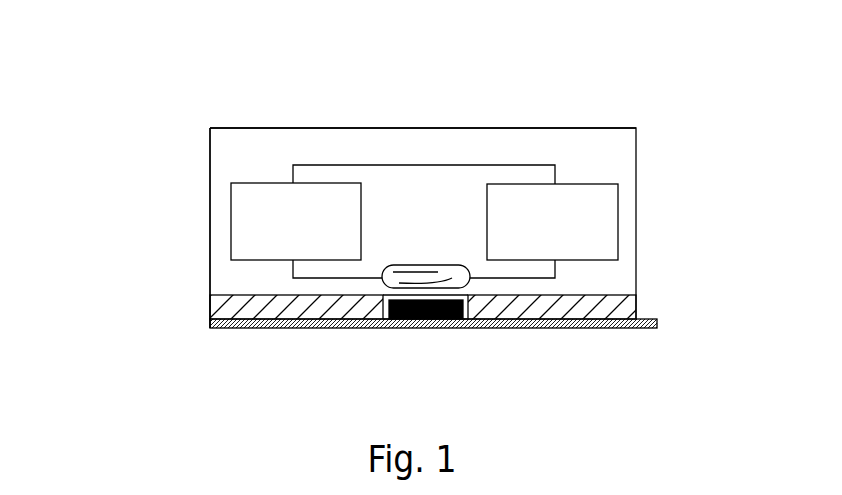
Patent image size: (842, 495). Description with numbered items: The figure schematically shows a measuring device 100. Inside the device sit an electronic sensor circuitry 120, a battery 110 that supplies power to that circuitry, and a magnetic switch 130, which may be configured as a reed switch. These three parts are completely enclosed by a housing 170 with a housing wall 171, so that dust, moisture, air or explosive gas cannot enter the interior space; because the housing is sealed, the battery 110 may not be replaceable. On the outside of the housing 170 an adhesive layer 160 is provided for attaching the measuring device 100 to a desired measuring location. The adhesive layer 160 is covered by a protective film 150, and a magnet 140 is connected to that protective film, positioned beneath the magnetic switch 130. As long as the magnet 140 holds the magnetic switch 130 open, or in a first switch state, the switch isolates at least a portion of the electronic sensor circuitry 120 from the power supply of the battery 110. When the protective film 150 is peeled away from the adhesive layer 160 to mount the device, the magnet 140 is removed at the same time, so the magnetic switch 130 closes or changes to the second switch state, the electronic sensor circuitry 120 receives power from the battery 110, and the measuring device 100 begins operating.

The measuring device 100 is at (605, 97).
The battery 110 is at (552, 222).
The electronic sensor circuitry 120 is at (296, 221).
The magnetic switch 130 is at (405, 265).
The magnet 140 is at (425, 330).
The protective film 150 is at (602, 331).
The adhesive layer 160 is at (636, 312).
The housing 170 is at (204, 194).
The housing wall 171 is at (265, 128).